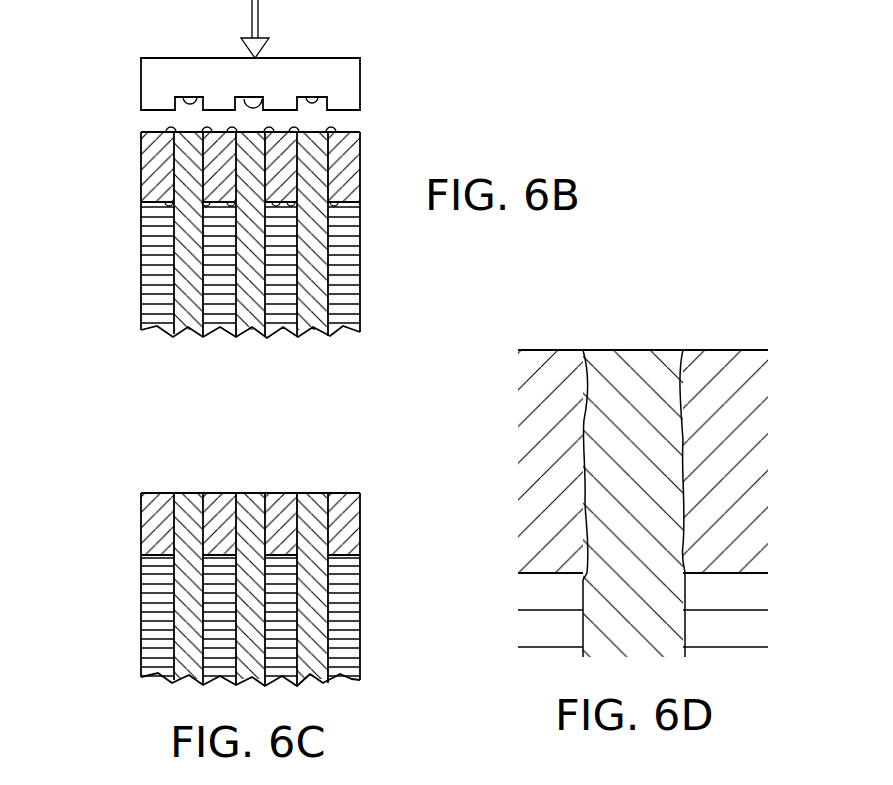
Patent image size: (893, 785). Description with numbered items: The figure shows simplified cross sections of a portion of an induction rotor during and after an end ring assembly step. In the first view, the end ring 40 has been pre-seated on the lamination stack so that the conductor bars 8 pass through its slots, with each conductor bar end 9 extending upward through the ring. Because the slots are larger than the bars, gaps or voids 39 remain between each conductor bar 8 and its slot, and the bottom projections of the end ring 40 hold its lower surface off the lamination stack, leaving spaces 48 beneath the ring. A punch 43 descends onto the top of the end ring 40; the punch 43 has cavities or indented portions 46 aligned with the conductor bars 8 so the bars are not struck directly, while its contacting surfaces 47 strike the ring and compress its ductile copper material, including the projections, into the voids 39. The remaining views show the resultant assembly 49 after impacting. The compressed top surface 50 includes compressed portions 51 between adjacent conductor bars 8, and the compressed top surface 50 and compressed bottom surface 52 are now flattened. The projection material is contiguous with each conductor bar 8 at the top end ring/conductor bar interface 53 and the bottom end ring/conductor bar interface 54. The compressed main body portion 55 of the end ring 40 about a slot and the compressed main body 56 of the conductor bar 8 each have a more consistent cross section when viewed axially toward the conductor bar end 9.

In FIG. 6C, the conductor bar 8 is at (313, 663).
In FIG. 6D, the conductor bar 8 is at (648, 465).
In FIG. 6C, the conductor bar end 9 is at (193, 493).
In FIG. 6D, the conductor bar end 9 is at (662, 350).
In FIG. 6B, the gap/void 39 is at (308, 160).
In FIG. 6B, the end ring 40 is at (362, 172).
In FIG. 6D, the end ring 40 is at (738, 405).
In FIG. 6B, the punch 43 is at (362, 70).
In FIG. 6B, the cavity/indented portion 46 is at (190, 98).
In FIG. 6B, the contacting surface 47 is at (220, 112).
In FIG. 6B, the space 48 is at (347, 207).
In FIG. 6C, the resultant assembly 49 is at (106, 546).
In FIG. 6C, the compressed top surface 50 is at (158, 493).
In FIG. 6C, the compressed portion 51 is at (218, 493).
In FIG. 6C, the compressed bottom surface 52 is at (161, 558).
In FIG. 6D, the top end ring/conductor bar interface 53 is at (583, 350).
In FIG. 6D, the bottom end ring/conductor bar interface 54 is at (585, 573).
In FIG. 6D, the compressed main body portion 55 is at (665, 415).
In FIG. 6D, the compressed main body 56 is at (585, 480).